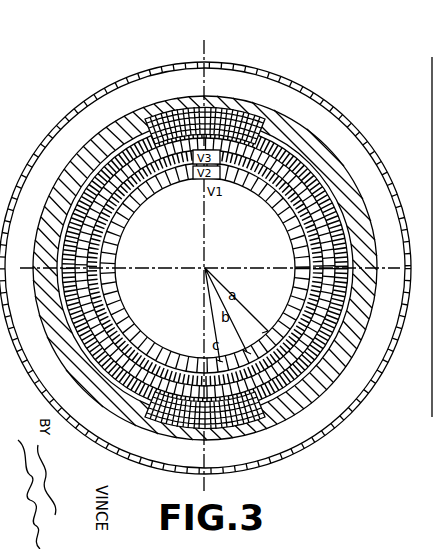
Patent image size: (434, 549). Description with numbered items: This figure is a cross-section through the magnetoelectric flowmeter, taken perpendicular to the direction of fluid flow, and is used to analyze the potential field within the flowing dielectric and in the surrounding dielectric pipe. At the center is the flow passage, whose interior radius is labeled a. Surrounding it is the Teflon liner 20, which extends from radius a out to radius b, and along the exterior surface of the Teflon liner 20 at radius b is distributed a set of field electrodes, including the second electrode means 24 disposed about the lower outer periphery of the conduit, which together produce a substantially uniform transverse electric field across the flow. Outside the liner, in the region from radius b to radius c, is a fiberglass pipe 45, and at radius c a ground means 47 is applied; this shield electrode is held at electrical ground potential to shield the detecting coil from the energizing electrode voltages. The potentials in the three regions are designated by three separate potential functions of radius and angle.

The Teflon liner 20 is at (113, 296).
The second electrode means 24 is at (350, 362).
The fiberglass pipe 45 is at (322, 292).
The ground means 47 is at (282, 378).